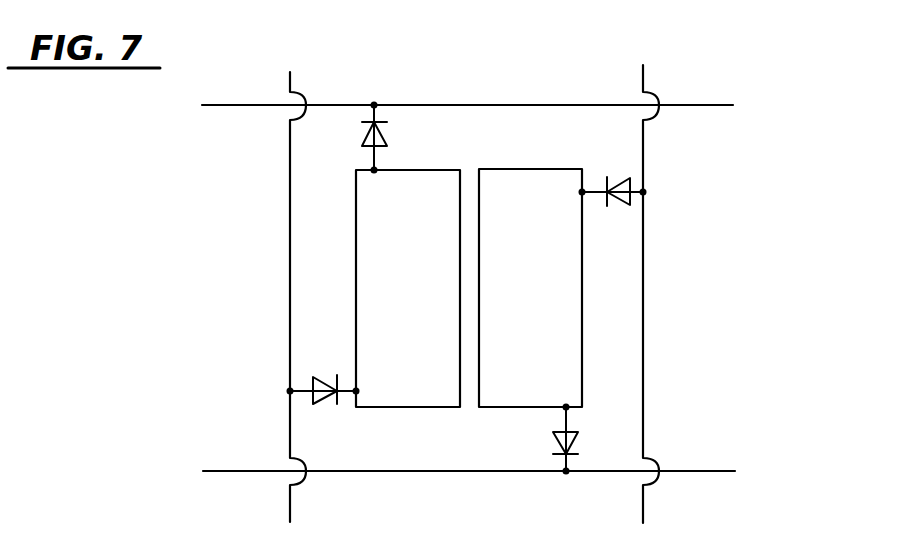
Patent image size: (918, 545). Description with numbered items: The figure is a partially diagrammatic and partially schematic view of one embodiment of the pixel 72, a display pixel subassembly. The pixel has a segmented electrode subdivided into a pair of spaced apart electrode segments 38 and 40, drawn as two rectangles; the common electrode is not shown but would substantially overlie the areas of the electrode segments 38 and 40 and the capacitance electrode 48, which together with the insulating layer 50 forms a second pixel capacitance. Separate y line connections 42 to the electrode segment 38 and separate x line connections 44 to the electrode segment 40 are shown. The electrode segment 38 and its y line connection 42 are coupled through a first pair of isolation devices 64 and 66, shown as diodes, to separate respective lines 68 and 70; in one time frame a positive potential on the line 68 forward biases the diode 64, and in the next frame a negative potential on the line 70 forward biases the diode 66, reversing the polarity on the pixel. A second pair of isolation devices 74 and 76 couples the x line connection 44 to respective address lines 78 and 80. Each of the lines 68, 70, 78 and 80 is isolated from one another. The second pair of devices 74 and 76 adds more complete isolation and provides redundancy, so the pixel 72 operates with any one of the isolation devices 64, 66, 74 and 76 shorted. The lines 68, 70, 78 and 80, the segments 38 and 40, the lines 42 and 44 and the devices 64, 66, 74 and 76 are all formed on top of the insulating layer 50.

The electrode segment 38 is at (424, 303).
The electrode segment 40 is at (512, 302).
The y address line 42 is at (372, 158).
The x address line 44 is at (594, 192).
The capacitance electrode 48 is at (468, 215).
The insulating layer 50 is at (556, 140).
The isolation device 64 is at (325, 378).
The isolation device 66 is at (388, 136).
The line 68 is at (290, 283).
The line 70 is at (491, 103).
The pixel 72 is at (748, 164).
The isolation device 74 is at (623, 200).
The isolation device 76 is at (553, 445).
The address line 78 is at (643, 328).
The address line 80 is at (507, 474).